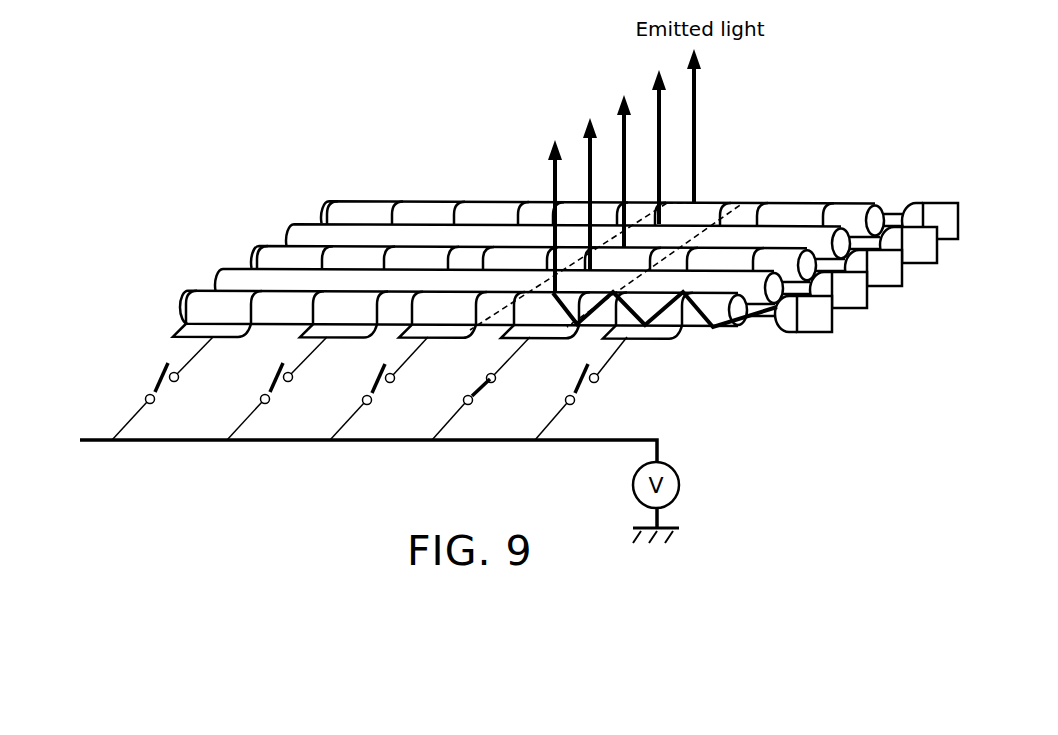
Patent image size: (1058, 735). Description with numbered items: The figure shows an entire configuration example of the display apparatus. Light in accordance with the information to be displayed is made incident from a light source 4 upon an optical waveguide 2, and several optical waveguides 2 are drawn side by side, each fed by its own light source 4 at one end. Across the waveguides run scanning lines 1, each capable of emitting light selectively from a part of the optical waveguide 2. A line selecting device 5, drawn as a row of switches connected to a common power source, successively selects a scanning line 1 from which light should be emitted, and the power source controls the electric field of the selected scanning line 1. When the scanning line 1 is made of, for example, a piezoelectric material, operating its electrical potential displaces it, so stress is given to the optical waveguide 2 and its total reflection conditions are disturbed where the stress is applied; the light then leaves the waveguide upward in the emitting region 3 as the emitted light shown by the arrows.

The scanning line 1 is at (367, 200).
The optical waveguide 2 is at (858, 212).
The light emitting region 3 is at (718, 202).
The light source 4 is at (813, 333).
The line selecting device 5 is at (592, 393).